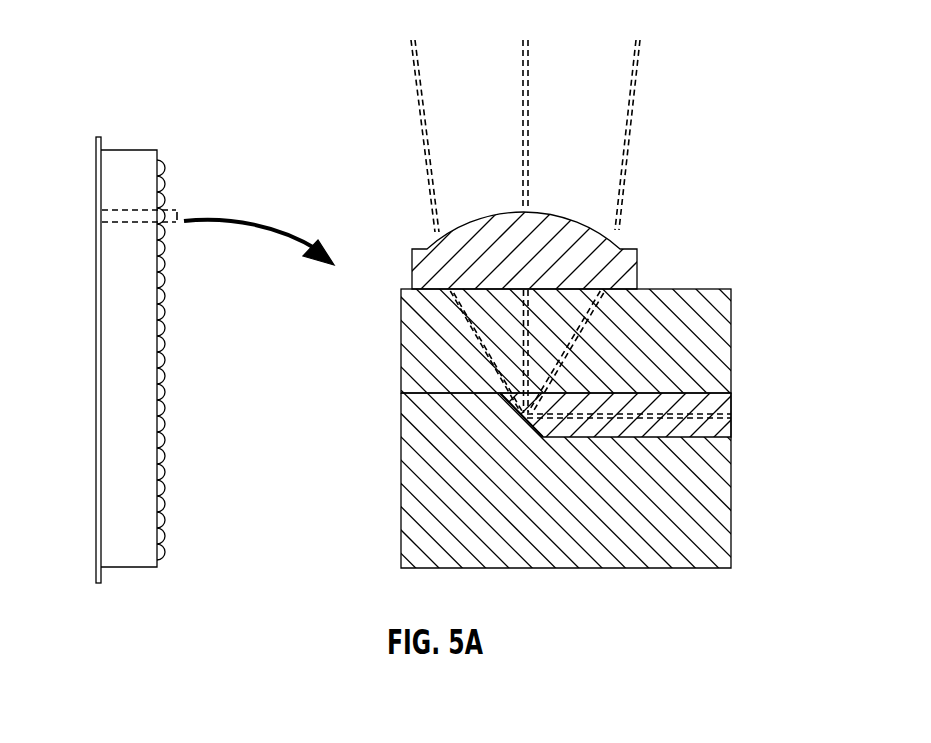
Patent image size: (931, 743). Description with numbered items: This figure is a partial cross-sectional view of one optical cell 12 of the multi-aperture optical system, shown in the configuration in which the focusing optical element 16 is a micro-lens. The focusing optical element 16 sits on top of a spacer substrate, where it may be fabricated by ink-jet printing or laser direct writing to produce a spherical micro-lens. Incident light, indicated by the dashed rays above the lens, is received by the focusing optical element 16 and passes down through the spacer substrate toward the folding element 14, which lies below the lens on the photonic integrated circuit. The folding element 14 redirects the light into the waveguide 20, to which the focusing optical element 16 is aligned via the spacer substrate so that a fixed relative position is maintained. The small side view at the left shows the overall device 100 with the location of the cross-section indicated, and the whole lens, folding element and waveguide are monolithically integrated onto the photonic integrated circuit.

The electronic device 100 is at (149, 338).
The optical cell 12 is at (399, 223).
The focusing optical element 16 is at (625, 268).
The waveguide 20 is at (713, 403).
The folding element 14 is at (530, 418).